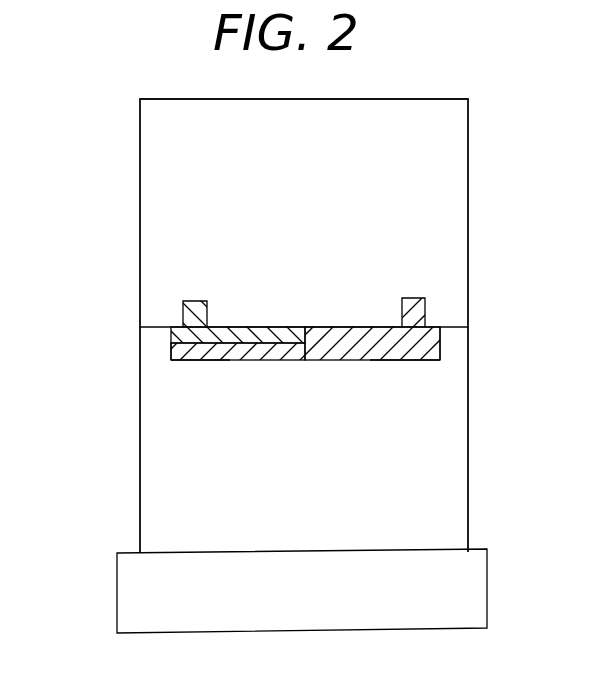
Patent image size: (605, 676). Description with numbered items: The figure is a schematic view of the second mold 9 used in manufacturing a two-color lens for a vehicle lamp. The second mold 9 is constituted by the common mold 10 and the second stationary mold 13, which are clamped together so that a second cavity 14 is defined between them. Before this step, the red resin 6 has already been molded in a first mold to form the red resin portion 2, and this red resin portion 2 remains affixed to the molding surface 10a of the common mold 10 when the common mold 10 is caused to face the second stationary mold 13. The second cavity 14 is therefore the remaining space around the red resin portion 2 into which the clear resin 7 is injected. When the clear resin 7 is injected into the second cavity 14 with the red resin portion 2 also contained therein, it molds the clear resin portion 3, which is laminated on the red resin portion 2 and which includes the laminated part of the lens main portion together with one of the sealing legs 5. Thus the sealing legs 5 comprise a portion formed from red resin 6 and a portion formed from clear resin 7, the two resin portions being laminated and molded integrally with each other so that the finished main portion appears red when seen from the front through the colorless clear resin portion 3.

The second mold 9 is at (510, 180).
The common mold 10 is at (168, 133).
The molding surface 10a is at (352, 327).
The second stationary mold 13 is at (452, 497).
The red resin portion 2 is at (228, 327).
The second cavity 14 is at (255, 360).
The clear resin portion 3 is at (312, 360).
The sealing legs 5 is at (195, 300).
The red resin 6 is at (205, 352).
The clear resin 7 is at (383, 362).